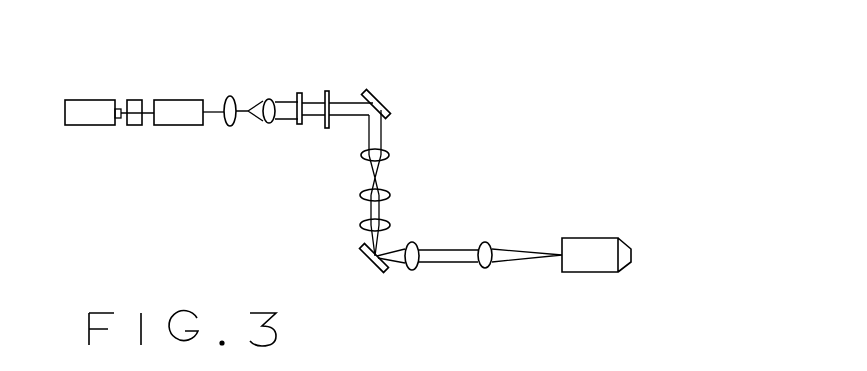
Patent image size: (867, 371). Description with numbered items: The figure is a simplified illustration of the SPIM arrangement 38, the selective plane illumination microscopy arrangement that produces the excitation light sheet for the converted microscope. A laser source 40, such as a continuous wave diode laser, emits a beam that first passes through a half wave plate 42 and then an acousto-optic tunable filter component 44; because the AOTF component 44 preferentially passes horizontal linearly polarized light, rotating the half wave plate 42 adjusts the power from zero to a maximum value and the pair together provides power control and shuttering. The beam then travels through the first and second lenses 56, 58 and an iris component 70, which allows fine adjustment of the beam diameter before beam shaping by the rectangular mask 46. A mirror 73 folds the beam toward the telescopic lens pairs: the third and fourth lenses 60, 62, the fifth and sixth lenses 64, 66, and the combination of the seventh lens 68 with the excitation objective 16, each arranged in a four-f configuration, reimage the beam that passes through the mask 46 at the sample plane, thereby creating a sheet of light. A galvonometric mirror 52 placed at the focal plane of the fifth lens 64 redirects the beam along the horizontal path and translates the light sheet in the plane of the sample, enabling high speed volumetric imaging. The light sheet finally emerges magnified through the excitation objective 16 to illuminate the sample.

The excitation objective 16 is at (578, 238).
The SPIM arrangement 38 is at (527, 140).
The laser source 40 is at (98, 100).
The half wave plate 42 is at (133, 126).
The acousto-optic tunable filter component 44 is at (167, 100).
The rectangular mask 46 is at (328, 129).
The galvonometric mirror 52 is at (364, 262).
The first lens 56 is at (232, 128).
The second lens 58 is at (273, 123).
The third lens 60 is at (388, 152).
The fourth lens 62 is at (388, 193).
The fifth lens 64 is at (388, 223).
The sixth lens 66 is at (408, 269).
The seventh lens 68 is at (487, 269).
The iris component 70 is at (302, 97).
The mirror 73 is at (381, 106).